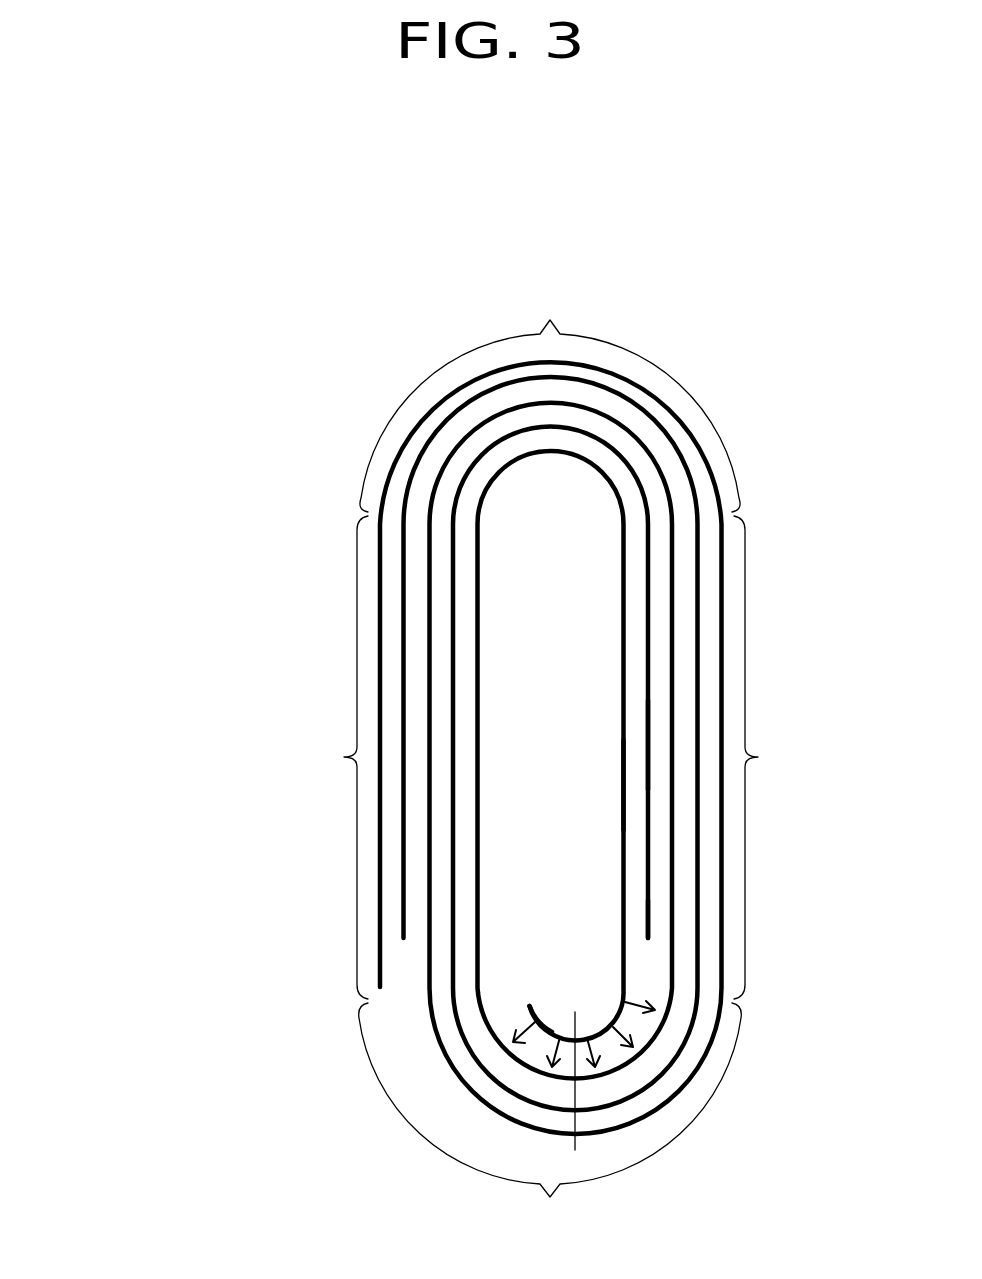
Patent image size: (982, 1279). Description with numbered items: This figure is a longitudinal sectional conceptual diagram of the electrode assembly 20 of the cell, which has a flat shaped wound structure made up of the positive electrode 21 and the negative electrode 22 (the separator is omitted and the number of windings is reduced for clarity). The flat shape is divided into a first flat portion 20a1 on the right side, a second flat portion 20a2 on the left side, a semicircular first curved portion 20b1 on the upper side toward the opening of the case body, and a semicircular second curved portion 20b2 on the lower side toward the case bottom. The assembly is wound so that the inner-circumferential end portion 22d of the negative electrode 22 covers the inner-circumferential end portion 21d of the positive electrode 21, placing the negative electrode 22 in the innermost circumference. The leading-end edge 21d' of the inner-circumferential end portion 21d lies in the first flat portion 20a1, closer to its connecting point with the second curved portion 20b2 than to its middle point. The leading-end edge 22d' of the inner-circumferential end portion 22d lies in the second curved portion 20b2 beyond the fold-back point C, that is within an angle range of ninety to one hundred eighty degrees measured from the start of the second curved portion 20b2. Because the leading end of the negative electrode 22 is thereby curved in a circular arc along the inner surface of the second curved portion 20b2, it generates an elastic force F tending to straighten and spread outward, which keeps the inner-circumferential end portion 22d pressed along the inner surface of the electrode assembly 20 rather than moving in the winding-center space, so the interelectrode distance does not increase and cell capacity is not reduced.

The electrode assembly 20 is at (792, 276).
The positive electrode 21 is at (647, 565).
The negative electrode 22 is at (624, 663).
The first flat portion 20a1 is at (799, 757).
The second flat portion 20a2 is at (299, 757).
The first curved portion 20b1 is at (550, 401).
The second curved portion 20b2 is at (550, 1119).
The inner-circumferential end portion of the positive electrode 21d is at (591, 745).
The inner-circumferential end portion of the negative electrode 22d is at (563, 785).
The leading-end edge of the inner-circumferential end portion of the positive electr 21d' is at (583, 891).
The leading-end edge of the inner-circumferential end portion of the negative electr 22d' is at (563, 970).